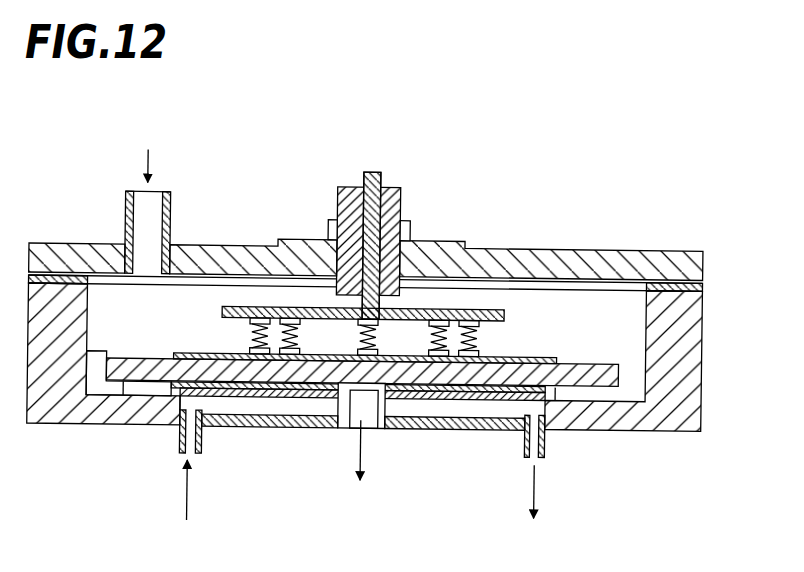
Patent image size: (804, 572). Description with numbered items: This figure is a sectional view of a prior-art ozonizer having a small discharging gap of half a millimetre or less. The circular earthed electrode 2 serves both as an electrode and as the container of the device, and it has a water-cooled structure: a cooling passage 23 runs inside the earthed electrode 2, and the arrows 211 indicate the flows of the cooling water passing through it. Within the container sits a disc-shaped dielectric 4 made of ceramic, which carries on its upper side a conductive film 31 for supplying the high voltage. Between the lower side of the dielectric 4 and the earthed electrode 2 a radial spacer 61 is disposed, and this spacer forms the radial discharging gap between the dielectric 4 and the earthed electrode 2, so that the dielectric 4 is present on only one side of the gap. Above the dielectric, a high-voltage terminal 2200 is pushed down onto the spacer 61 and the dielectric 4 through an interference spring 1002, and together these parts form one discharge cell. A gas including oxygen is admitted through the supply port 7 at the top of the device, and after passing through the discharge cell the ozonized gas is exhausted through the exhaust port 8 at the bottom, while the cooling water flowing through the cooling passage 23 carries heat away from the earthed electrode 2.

The earthed electrode 2 is at (696, 332).
The supply port 7 is at (124, 204).
The high-voltage terminal 2200 is at (380, 169).
The interference spring 1002 is at (234, 303).
The conductive film 31 is at (540, 356).
The dielectric 4 is at (598, 355).
The radial spacer 61 is at (310, 389).
The exhaust port 8 is at (375, 404).
The cooling passage 23 is at (448, 405).
The flows of cooling water 211 is at (190, 503).